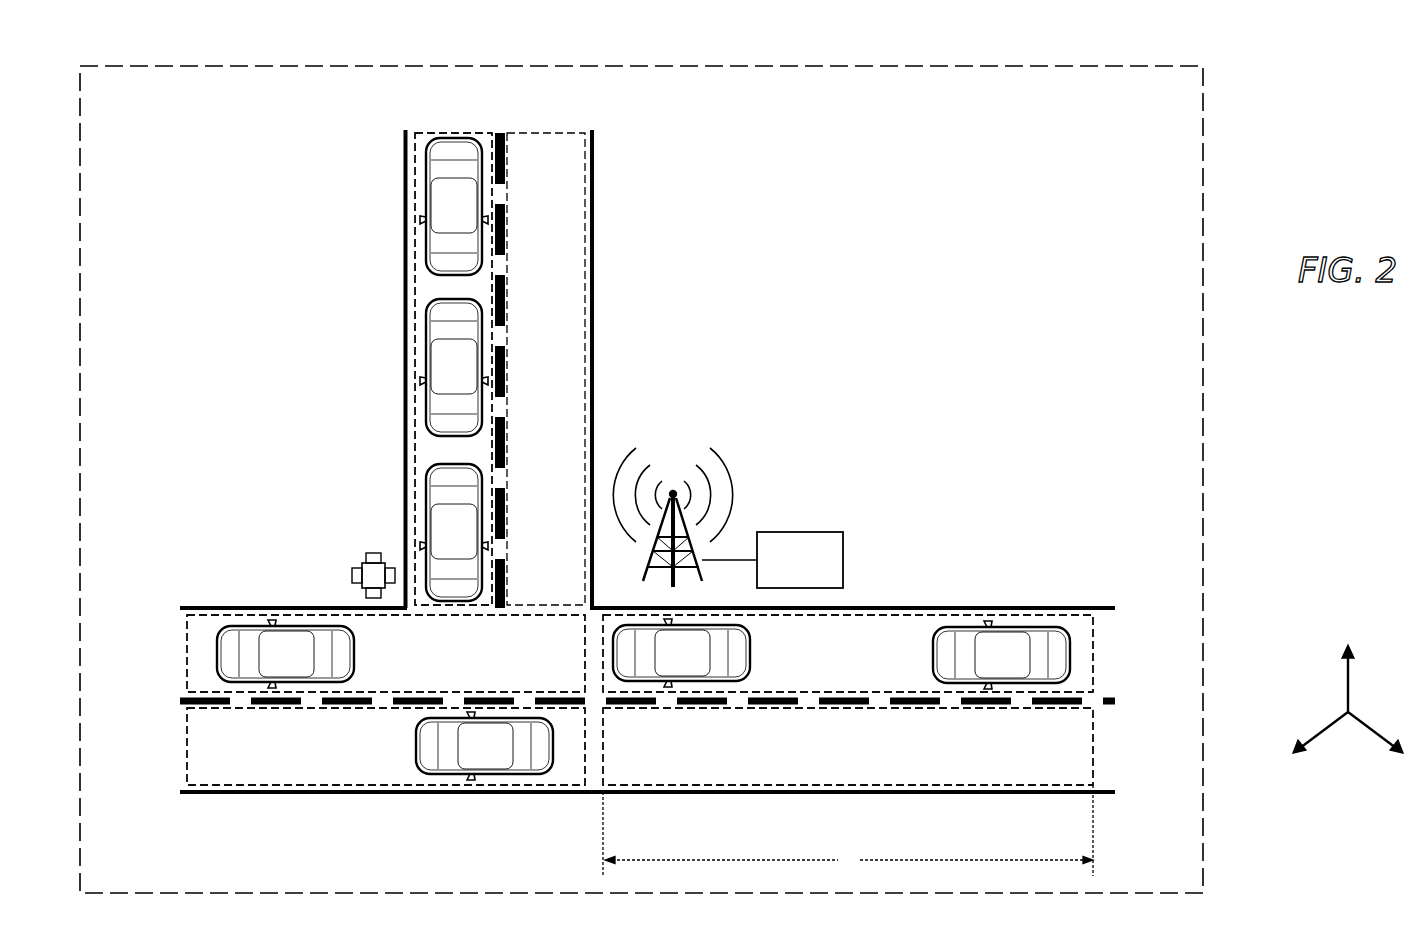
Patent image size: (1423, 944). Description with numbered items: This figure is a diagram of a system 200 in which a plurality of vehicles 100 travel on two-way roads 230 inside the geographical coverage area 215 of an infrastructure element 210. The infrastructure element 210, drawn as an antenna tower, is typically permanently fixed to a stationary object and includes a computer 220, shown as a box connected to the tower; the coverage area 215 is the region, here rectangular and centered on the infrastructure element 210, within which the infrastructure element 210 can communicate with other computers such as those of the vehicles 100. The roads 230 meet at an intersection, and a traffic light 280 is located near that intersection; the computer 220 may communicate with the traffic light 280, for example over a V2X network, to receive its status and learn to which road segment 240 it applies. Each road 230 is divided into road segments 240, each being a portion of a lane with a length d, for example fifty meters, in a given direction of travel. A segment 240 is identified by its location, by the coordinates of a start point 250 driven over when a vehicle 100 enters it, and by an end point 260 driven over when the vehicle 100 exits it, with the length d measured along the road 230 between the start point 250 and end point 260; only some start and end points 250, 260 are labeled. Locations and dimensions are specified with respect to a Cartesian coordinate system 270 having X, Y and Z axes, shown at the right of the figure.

The vehicle 100 is at (455, 209).
The system 200 is at (1085, 46).
The infrastructure element 210 is at (682, 436).
The geographical coverage area 215 is at (215, 64).
The computer 220 is at (808, 577).
The road 230 is at (594, 255).
The road segment 240 is at (587, 162).
The start point 250 is at (432, 132).
The end point 260 is at (187, 648).
The Cartesian coordinate system 270 is at (1329, 778).
The traffic light 280 is at (372, 552).